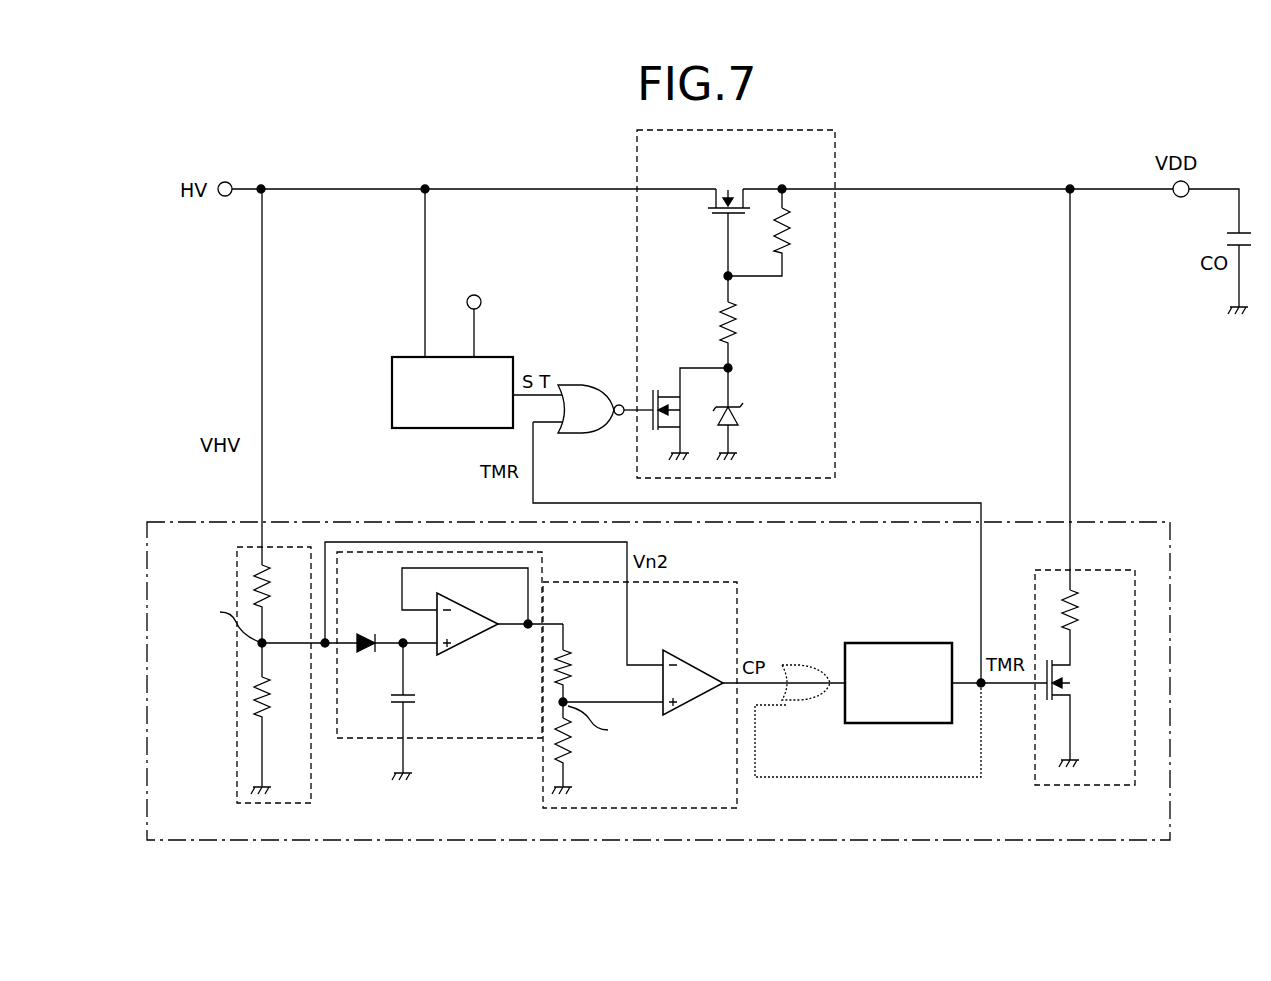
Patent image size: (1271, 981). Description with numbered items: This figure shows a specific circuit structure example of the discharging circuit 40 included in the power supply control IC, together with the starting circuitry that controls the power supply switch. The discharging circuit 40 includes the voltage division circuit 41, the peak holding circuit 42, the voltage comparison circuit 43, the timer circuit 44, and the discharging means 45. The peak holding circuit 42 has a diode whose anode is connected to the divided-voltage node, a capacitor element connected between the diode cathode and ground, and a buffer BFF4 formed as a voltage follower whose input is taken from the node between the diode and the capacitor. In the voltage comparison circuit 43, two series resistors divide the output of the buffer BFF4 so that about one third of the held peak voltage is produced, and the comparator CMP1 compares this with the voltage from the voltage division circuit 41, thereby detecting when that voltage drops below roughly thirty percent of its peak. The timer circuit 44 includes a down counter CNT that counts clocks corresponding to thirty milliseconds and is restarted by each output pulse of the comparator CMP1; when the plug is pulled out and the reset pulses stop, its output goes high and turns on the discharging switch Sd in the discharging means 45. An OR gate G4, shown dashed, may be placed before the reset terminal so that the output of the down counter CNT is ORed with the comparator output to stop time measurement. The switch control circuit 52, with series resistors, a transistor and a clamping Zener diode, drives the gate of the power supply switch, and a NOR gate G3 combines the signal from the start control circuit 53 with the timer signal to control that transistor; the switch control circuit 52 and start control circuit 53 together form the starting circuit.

The discharging circuit 40 is at (517, 840).
The voltage division circuit 41 is at (237, 738).
The peak holding circuit 42 is at (449, 678).
The voltage comparison circuit 43 is at (694, 695).
The timer circuit 44 is at (898, 678).
The discharging means 45 is at (1057, 500).
The switch control circuit 52 is at (835, 343).
The start control circuit 53 is at (392, 372).
The NOR gate G3 is at (588, 433).
The OR gate G4 is at (805, 718).
The buffer BFF4 is at (476, 646).
The comparator CMP1 is at (682, 651).
The down counter CNT is at (878, 643).
The discharging switch Sd is at (1080, 690).